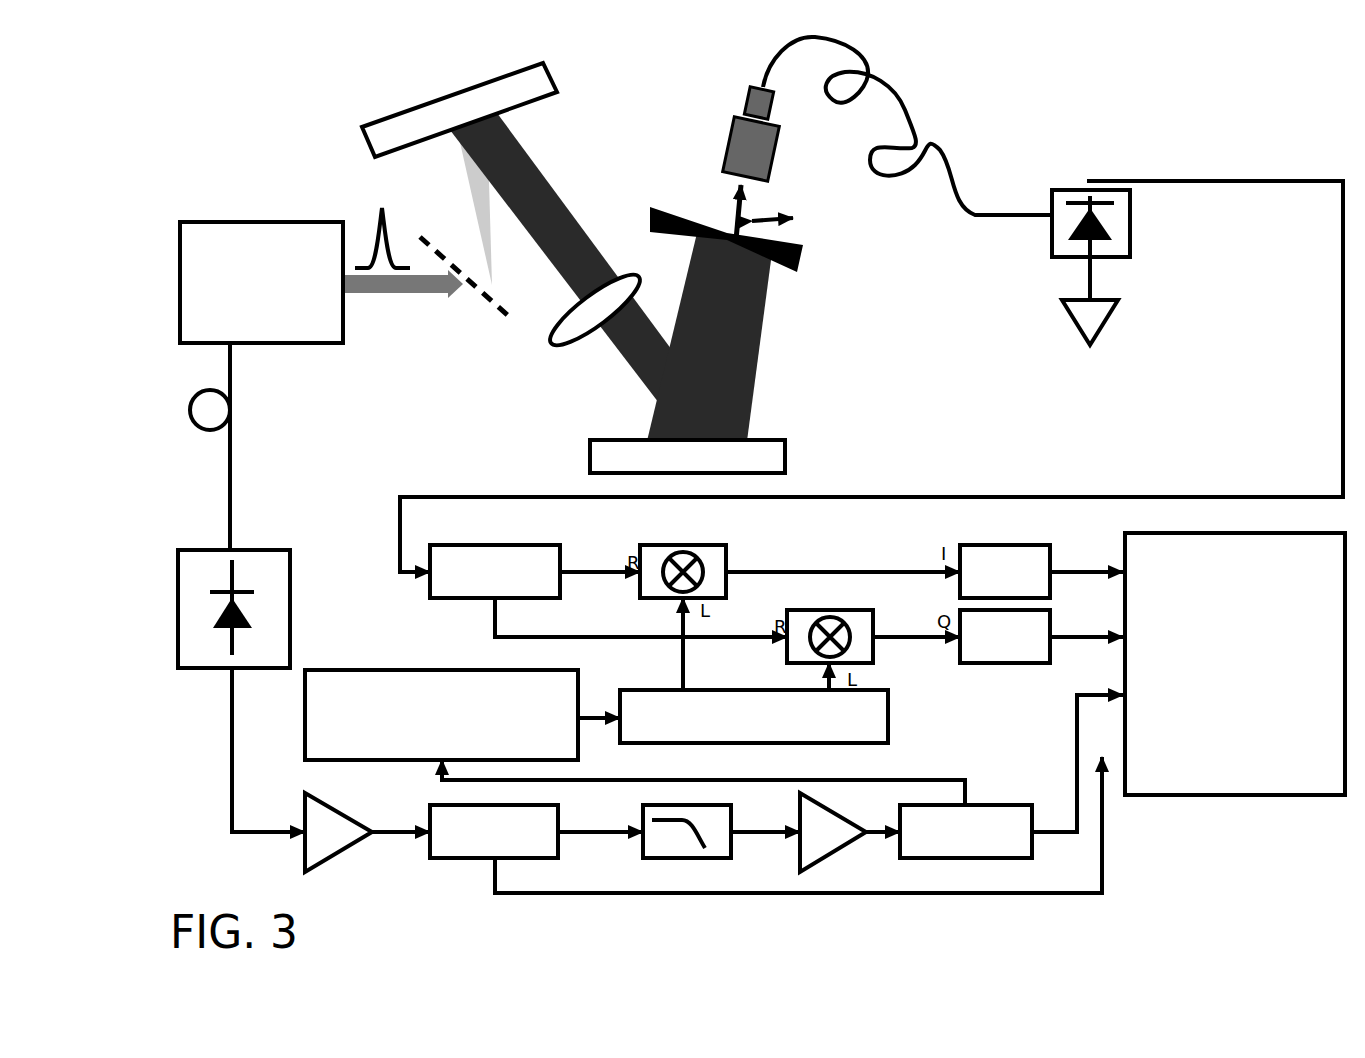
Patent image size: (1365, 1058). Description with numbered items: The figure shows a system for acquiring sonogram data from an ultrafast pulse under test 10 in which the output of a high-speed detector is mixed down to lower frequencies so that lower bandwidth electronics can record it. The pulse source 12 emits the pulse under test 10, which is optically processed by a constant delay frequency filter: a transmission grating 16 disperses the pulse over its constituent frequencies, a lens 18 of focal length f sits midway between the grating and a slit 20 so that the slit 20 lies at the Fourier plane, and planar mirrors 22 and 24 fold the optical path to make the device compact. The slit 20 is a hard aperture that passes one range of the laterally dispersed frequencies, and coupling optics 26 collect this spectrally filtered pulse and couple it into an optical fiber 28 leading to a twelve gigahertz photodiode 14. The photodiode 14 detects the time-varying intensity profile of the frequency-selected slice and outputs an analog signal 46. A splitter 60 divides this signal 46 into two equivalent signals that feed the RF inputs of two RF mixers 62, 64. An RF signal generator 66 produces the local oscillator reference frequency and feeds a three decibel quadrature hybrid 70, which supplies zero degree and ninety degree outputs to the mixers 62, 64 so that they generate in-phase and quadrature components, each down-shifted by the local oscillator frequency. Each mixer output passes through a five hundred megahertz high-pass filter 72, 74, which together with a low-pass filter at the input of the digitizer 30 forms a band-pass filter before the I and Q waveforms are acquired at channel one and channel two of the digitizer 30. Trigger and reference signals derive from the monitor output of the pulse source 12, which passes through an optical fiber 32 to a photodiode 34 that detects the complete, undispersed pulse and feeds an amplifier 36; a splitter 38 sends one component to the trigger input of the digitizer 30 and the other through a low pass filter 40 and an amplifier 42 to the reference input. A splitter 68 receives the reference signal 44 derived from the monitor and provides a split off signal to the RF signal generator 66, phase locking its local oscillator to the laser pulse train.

The pulse under test 10 is at (366, 226).
The pulse source 12 is at (284, 222).
The photodiode 14 is at (1072, 190).
The transmission grating 16 is at (494, 311).
The lens 18 is at (618, 262).
The slit 20 is at (660, 205).
The planar mirror 22 is at (430, 104).
The planar mirror 24 is at (793, 452).
The coupling optics 26 is at (778, 145).
The optical fiber 28 is at (912, 108).
The digitizer 30 is at (1243, 795).
The optical fiber 32 is at (235, 450).
The photodiode 34 is at (292, 570).
The amplifier 36 is at (303, 855).
The splitter 38 is at (455, 862).
The low pass filter 40 is at (645, 850).
The amplifier 42 is at (838, 800).
The reference signal 44 is at (880, 836).
The analog signal 46 is at (1226, 181).
The splitter 60 is at (478, 545).
The RF mixer 62 is at (678, 545).
The RF mixer 64 is at (832, 610).
The RF signal generator 66 is at (455, 670).
The splitter 68 is at (985, 805).
The quadrature hybrid 70 is at (740, 743).
The high-pass filter 72 is at (998, 543).
The high-pass filter 74 is at (1055, 622).